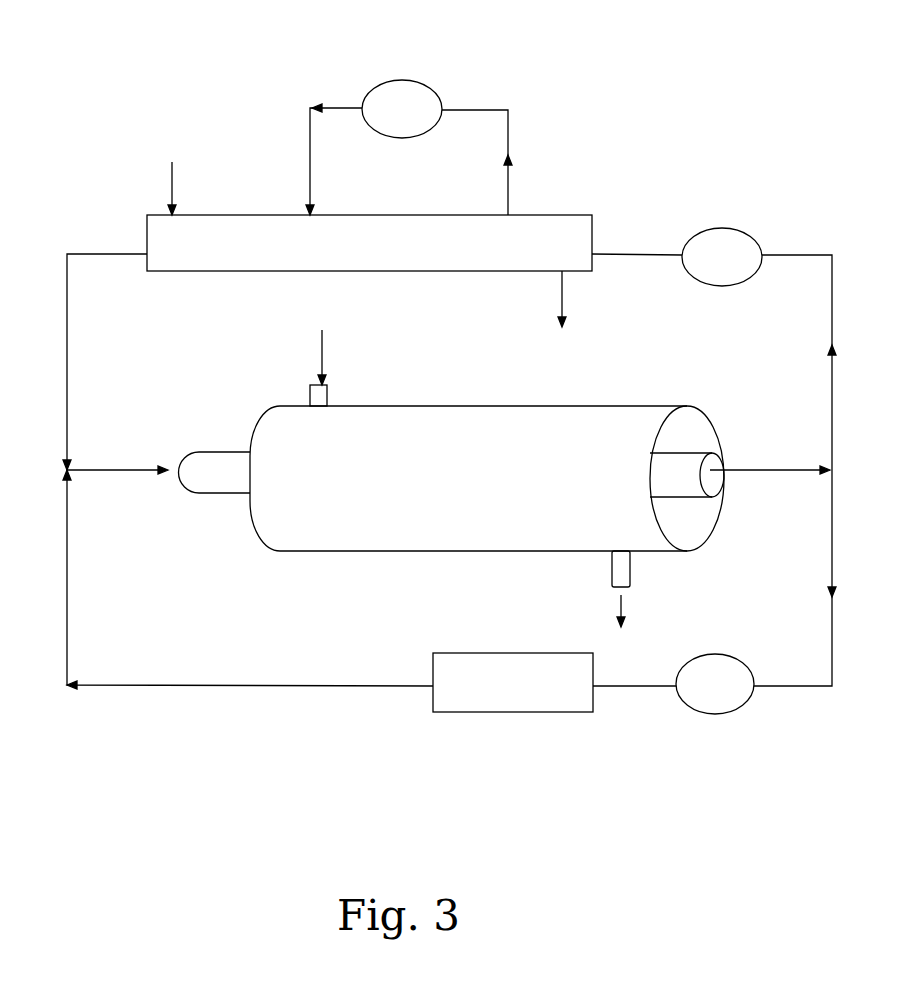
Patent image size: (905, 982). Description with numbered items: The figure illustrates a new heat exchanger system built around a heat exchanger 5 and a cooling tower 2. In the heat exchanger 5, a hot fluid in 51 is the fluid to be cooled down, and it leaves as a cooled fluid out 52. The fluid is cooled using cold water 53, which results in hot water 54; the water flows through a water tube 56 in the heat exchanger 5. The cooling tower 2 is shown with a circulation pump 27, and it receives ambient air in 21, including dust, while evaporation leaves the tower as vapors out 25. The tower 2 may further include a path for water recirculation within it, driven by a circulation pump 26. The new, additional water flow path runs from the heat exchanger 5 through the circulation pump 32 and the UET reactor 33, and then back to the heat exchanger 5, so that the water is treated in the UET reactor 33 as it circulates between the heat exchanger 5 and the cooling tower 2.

The cooling tower 2 is at (232, 82).
The ambient air in 21 is at (173, 190).
The vapors out 25 is at (565, 298).
The circulation pump 26 is at (414, 83).
The circulation pump 27 is at (738, 232).
The heat exchanger 5 is at (357, 572).
The hot fluid in 51 is at (323, 358).
The cooled fluid out 52 is at (622, 603).
The cold water 53 is at (140, 465).
The hot water 54 is at (740, 470).
The water tube 56 is at (213, 455).
The circulation pump 32 is at (733, 707).
The UET reactor 33 is at (513, 707).